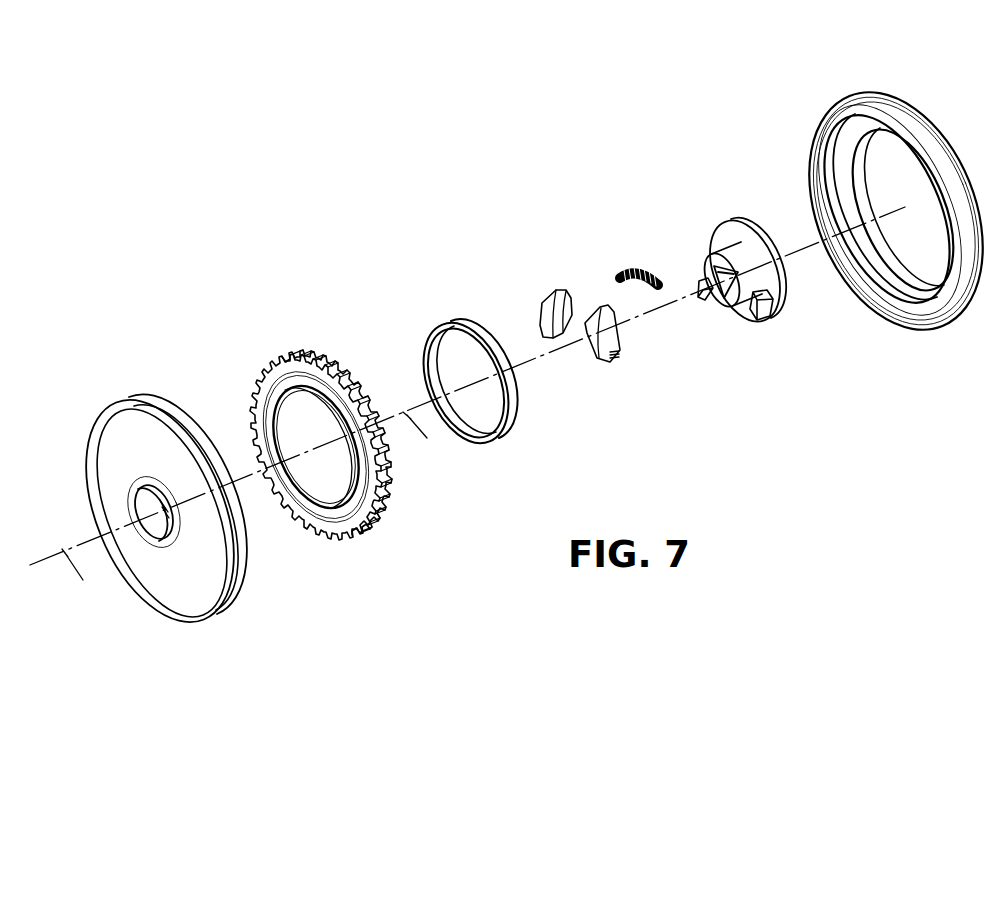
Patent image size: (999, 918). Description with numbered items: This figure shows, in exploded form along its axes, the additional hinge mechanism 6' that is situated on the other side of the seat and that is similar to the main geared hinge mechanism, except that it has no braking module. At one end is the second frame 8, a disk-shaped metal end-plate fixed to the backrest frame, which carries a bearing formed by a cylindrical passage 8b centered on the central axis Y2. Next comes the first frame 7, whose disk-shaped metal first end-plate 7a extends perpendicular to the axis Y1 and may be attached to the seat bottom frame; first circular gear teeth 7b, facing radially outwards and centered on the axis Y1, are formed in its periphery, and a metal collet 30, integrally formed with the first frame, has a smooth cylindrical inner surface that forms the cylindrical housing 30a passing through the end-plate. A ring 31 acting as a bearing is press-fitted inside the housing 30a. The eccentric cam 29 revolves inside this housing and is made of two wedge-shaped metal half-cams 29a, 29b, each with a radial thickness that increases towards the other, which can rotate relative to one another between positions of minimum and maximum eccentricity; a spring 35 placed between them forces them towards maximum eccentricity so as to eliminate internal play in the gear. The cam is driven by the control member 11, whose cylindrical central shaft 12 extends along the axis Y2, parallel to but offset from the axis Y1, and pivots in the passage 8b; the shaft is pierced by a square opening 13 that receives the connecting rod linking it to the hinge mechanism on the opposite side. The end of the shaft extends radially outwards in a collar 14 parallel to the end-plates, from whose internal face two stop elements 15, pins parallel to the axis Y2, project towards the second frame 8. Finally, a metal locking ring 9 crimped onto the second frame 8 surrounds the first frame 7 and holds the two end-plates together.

The additional hinge mechanism 6' is at (385, 115).
The first frame 7 is at (317, 428).
The first end-plate 7a is at (258, 393).
The first circular gear teeth 7b is at (360, 523).
The second frame 8 is at (146, 535).
The cylindrical passage 8b is at (153, 500).
The locking ring 9 is at (902, 108).
The control member 11 is at (734, 262).
The central shaft 12 is at (728, 260).
The opening 13 is at (717, 302).
The collar 14 is at (748, 242).
The stop element 15 is at (703, 283).
The eccentric cam 29 is at (579, 359).
The first half-cam 29a is at (545, 312).
The second half-cam 29b is at (612, 338).
The collet 30 is at (353, 390).
The cylindrical housing 30a is at (323, 493).
The ring 31 is at (500, 428).
The spring 35 is at (640, 267).
The axis Y1 is at (424, 440).
The central axis Y2 is at (83, 579).